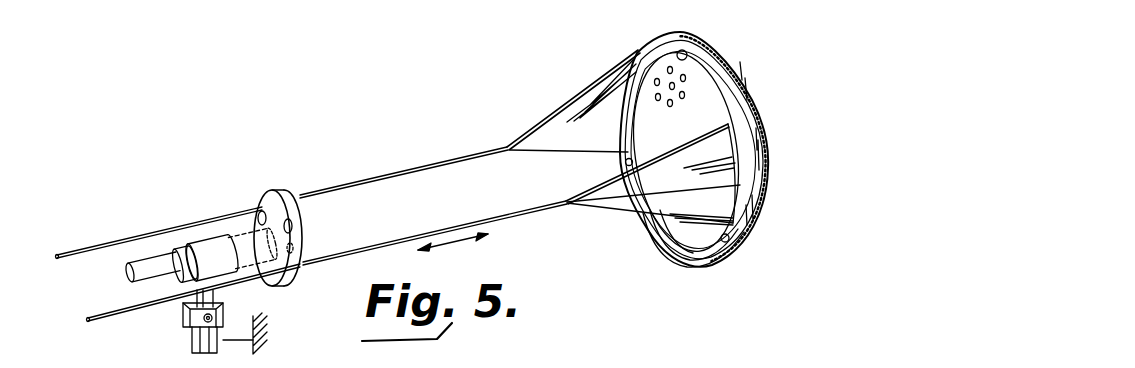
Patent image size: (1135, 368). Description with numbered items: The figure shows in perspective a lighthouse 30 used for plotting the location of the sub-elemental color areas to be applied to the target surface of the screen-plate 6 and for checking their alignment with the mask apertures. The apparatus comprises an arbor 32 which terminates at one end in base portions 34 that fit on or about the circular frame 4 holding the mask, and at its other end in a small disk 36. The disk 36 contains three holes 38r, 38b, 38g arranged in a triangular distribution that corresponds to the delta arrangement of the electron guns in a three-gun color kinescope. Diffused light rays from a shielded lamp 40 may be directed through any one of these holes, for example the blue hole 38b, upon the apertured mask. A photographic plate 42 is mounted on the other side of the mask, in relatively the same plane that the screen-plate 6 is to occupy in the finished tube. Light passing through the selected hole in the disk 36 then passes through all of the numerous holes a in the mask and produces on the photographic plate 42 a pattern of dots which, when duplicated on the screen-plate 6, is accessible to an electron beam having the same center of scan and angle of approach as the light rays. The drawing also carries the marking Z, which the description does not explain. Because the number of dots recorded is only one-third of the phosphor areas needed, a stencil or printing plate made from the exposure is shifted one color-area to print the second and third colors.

The lighthouse 30 is at (394, 157).
The arbor 32 is at (486, 152).
The base portions 34 is at (693, 202).
The disk 36 is at (278, 192).
The hole 38r is at (258, 197).
The hole 38g is at (300, 216).
The hole 38b is at (292, 241).
The shielded lamp 40 is at (232, 236).
The photographic plate 42 is at (747, 100).
The screen-plate 6 is at (763, 160).
The circular frame 4 is at (728, 226).
The disc Z is at (677, 142).
The holes a is at (683, 99).